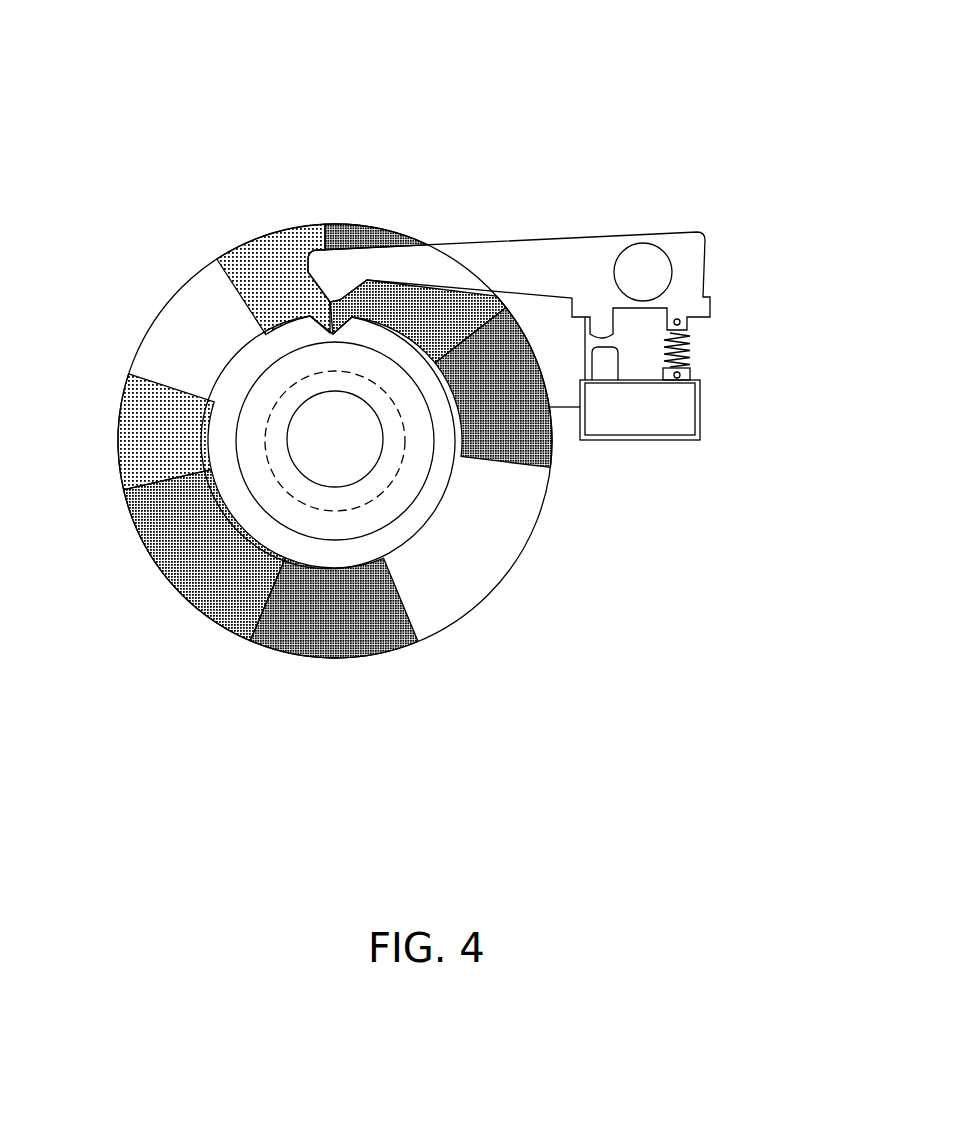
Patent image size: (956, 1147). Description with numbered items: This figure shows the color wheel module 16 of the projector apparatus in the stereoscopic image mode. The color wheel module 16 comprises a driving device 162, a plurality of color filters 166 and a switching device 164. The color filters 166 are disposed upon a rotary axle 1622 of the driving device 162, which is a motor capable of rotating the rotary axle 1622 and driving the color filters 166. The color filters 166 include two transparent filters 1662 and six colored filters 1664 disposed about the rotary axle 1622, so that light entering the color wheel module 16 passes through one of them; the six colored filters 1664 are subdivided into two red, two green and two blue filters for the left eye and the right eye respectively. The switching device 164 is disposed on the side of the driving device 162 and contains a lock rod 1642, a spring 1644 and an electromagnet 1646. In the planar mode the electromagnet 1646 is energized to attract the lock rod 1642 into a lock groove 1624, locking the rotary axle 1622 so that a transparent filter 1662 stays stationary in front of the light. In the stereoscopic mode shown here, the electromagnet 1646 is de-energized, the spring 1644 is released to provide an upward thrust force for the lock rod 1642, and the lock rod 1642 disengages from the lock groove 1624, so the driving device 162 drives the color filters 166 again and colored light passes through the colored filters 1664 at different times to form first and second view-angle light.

The color wheel module 16 is at (118, 49).
The driving device 162 is at (265, 455).
The rotary axle 1622 is at (298, 474).
The lock groove 1624 is at (322, 322).
The switching device 164 is at (586, 336).
The lock rod 1642 is at (692, 270).
The spring 1644 is at (693, 347).
The electromagnet 1646 is at (605, 372).
The color filters 166 is at (335, 373).
The transparent filters 1662 is at (204, 278).
The colored filters 1664 is at (470, 290).